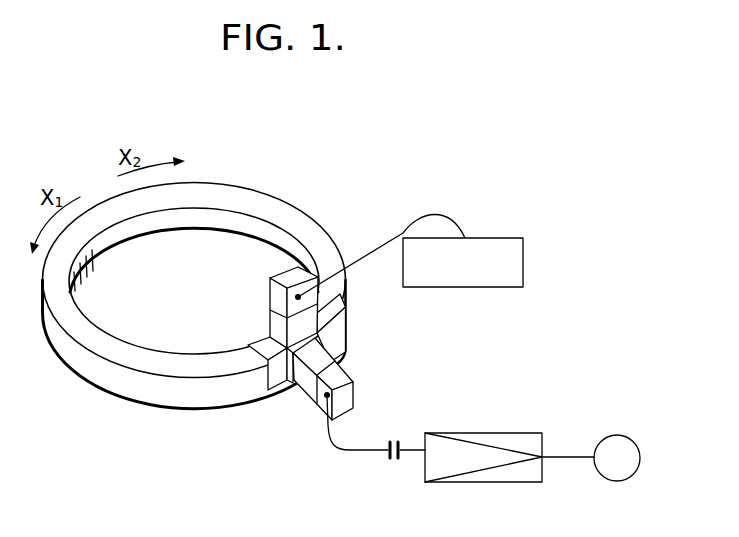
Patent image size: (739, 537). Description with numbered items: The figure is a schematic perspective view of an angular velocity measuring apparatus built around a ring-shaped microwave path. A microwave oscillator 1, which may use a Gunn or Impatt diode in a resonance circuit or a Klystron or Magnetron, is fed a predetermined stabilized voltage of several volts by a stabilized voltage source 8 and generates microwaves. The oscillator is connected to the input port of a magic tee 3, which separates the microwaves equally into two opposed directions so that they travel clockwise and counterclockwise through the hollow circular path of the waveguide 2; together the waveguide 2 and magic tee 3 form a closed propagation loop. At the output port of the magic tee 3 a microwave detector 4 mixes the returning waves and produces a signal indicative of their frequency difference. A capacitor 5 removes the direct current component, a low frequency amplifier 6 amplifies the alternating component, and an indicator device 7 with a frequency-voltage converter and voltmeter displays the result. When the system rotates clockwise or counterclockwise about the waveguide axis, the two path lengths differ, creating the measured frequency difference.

The microwave oscillator 1 is at (290, 270).
The waveguide 2 is at (108, 388).
The magic tee 3 is at (287, 389).
The microwave detector 4 is at (353, 396).
The capacitor 5 is at (392, 461).
The low frequency amplifier 6 is at (497, 433).
The indicator device 7 is at (620, 435).
The stabilized voltage source 8 is at (523, 272).